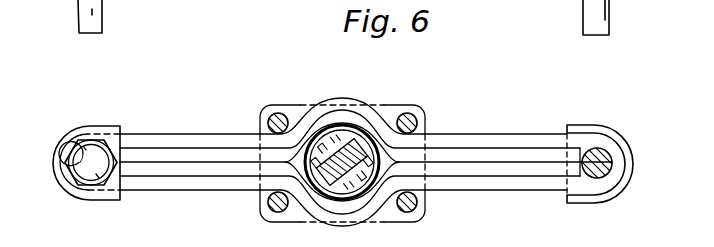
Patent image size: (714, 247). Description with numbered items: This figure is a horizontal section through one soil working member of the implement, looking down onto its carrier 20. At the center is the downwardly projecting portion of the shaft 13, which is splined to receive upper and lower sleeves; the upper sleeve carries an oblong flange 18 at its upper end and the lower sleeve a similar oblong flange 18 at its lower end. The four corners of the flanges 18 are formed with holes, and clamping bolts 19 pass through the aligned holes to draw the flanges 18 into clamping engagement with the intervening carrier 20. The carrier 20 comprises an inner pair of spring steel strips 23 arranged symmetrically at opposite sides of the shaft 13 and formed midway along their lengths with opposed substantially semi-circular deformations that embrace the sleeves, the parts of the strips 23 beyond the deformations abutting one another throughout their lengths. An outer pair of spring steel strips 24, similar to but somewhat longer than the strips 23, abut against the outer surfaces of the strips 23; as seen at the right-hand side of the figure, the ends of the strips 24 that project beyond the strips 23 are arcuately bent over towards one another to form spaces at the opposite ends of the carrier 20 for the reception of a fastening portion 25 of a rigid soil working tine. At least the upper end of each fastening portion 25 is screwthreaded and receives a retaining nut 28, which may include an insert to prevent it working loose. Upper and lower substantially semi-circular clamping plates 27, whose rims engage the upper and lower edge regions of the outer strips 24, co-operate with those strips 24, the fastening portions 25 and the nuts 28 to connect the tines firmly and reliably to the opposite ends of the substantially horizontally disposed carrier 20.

The shaft 13 is at (342, 126).
The oblong flange 18 is at (283, 106).
The clamping bolts 19 is at (268, 121).
The carrier 20 is at (507, 128).
The inner spring steel strips 23 is at (545, 157).
The outer spring steel strips 24 is at (197, 133).
The tine fastening portion 25 is at (606, 149).
The clamping plates 27 is at (104, 126).
The retaining nut 28 is at (78, 136).